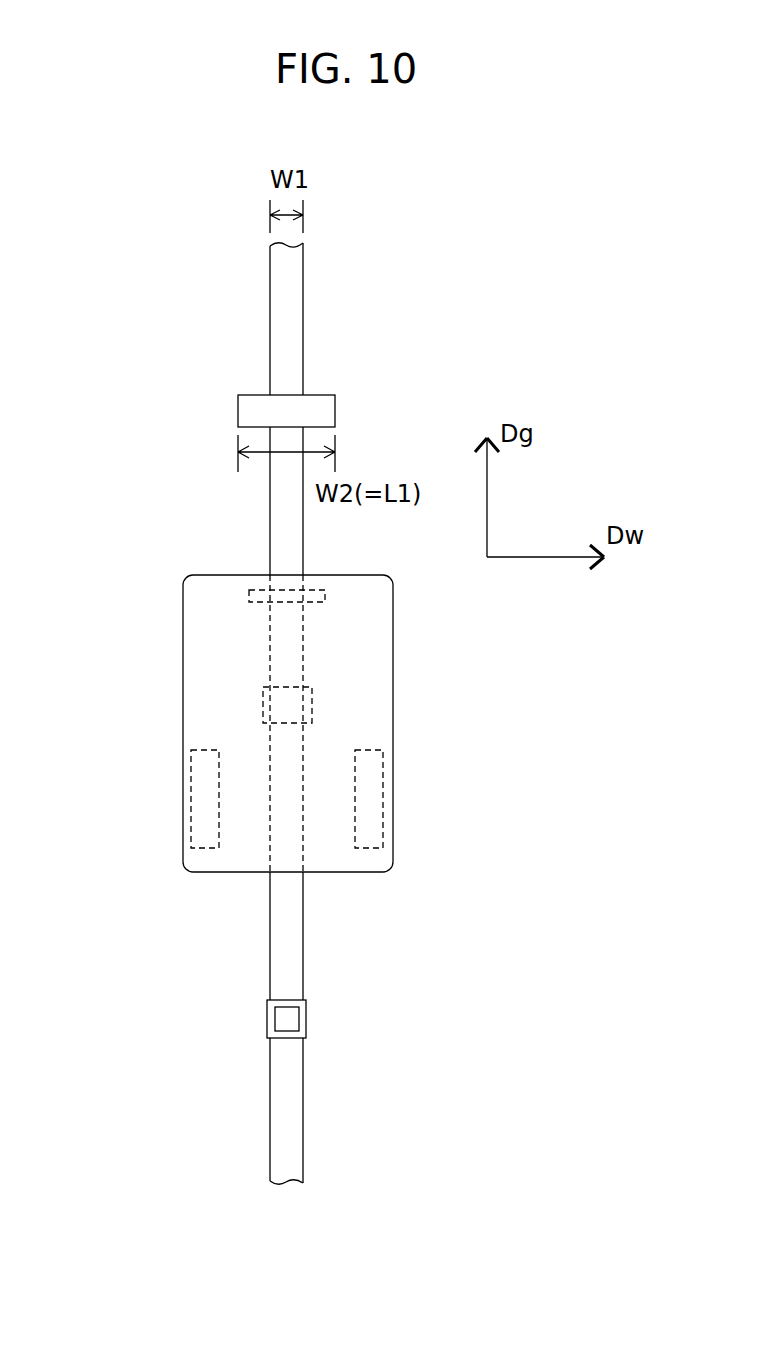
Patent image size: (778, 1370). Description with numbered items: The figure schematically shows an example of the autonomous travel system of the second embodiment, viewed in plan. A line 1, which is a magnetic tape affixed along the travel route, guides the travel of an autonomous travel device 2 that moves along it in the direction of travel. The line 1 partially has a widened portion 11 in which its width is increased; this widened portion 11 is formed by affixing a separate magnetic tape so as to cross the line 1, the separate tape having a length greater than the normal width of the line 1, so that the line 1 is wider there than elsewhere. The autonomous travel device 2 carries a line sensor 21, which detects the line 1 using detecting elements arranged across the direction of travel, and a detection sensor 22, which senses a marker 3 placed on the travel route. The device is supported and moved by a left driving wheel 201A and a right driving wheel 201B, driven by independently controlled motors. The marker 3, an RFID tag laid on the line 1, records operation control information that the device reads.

The line 1 is at (303, 293).
The widened portion 11 is at (238, 408).
The autonomous travel device 2 is at (183, 643).
The line sensor 21 is at (325, 597).
The detection sensor 22 is at (312, 705).
The left driving wheel 201A is at (191, 795).
The right driving wheel 201B is at (383, 800).
The marker 3 is at (306, 1020).